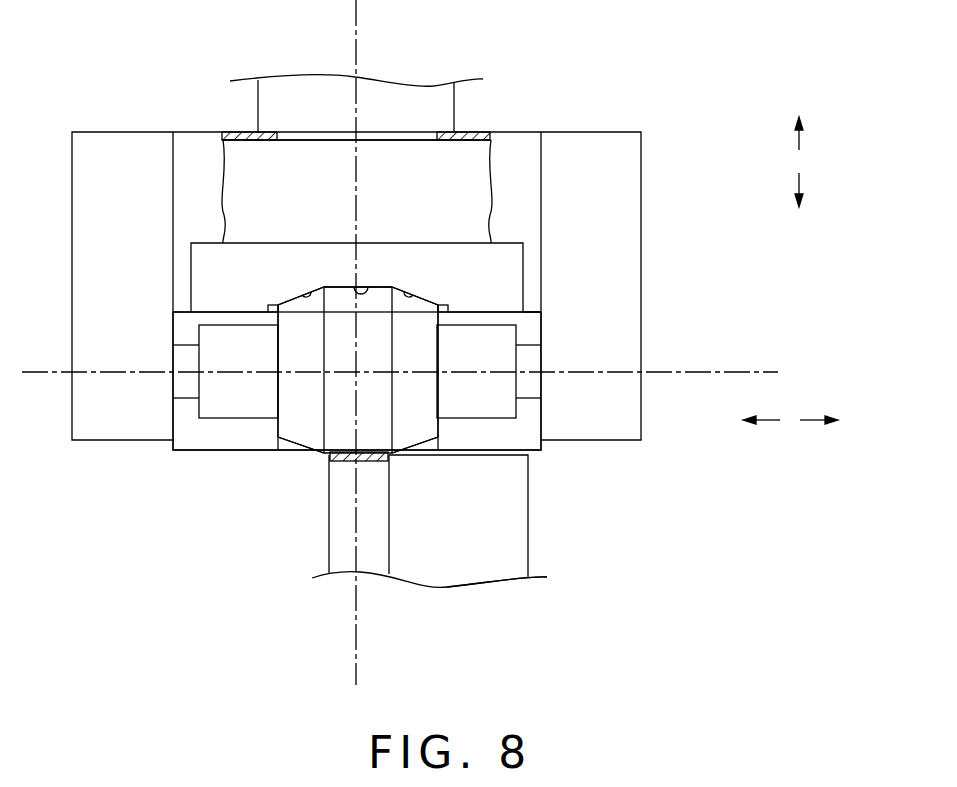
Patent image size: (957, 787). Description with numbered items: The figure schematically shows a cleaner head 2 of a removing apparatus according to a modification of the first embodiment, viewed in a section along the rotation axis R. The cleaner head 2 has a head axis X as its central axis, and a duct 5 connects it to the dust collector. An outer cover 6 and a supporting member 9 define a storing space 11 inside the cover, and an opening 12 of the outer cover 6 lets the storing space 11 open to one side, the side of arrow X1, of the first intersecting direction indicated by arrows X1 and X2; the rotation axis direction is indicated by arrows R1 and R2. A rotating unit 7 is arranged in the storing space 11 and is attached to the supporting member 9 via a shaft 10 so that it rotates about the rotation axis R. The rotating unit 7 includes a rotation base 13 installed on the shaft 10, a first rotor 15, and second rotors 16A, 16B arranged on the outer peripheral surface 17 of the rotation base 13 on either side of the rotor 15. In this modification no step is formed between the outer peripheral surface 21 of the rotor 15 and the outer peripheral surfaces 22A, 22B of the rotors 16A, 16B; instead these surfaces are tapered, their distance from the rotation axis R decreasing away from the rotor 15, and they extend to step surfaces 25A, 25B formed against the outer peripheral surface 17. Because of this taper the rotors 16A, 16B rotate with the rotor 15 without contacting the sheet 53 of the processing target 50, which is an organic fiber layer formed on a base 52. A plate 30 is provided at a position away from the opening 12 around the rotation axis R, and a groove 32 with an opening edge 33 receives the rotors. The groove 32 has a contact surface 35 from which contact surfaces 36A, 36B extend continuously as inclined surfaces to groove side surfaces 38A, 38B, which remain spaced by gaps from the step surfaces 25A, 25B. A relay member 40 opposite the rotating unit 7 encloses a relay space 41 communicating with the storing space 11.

The cleaner head 2 is at (646, 100).
The duct 5 is at (258, 108).
The outer cover 6 is at (182, 445).
The rotating unit 7 is at (221, 428).
The supporting member 9 is at (104, 433).
The shaft 10 is at (182, 353).
The storing space 11 is at (533, 328).
The opening 12 is at (530, 454).
The rotation base 13 is at (225, 335).
The rotor 15 is at (368, 305).
The rotor 16A is at (415, 303).
The rotor 16B is at (300, 303).
The outer peripheral surface 17 is at (505, 318).
The outer peripheral surface 21 is at (356, 461).
The outer peripheral surface 22A is at (418, 440).
The outer peripheral surface 22B is at (300, 440).
The step surface 25A is at (445, 435).
The step surface 25B is at (272, 440).
The plate 30 is at (494, 266).
The groove 32 is at (333, 289).
The opening edge 33 is at (268, 313).
The contact surface 35 is at (367, 286).
The contact surface 36A is at (404, 291).
The contact surface 36B is at (310, 291).
The groove side surface 38A is at (422, 300).
The groove side surface 38B is at (296, 300).
The relay member 40 is at (506, 150).
The relay space 41 is at (388, 155).
The processing target 50 is at (511, 546).
The base 52 is at (332, 556).
The sheet 53 is at (487, 578).
The head axis X is at (357, 36).
The arrow X1 is at (813, 191).
The arrow X2 is at (813, 135).
The rotation axis R is at (708, 368).
The arrow R1 is at (819, 434).
The arrow R2 is at (761, 434).